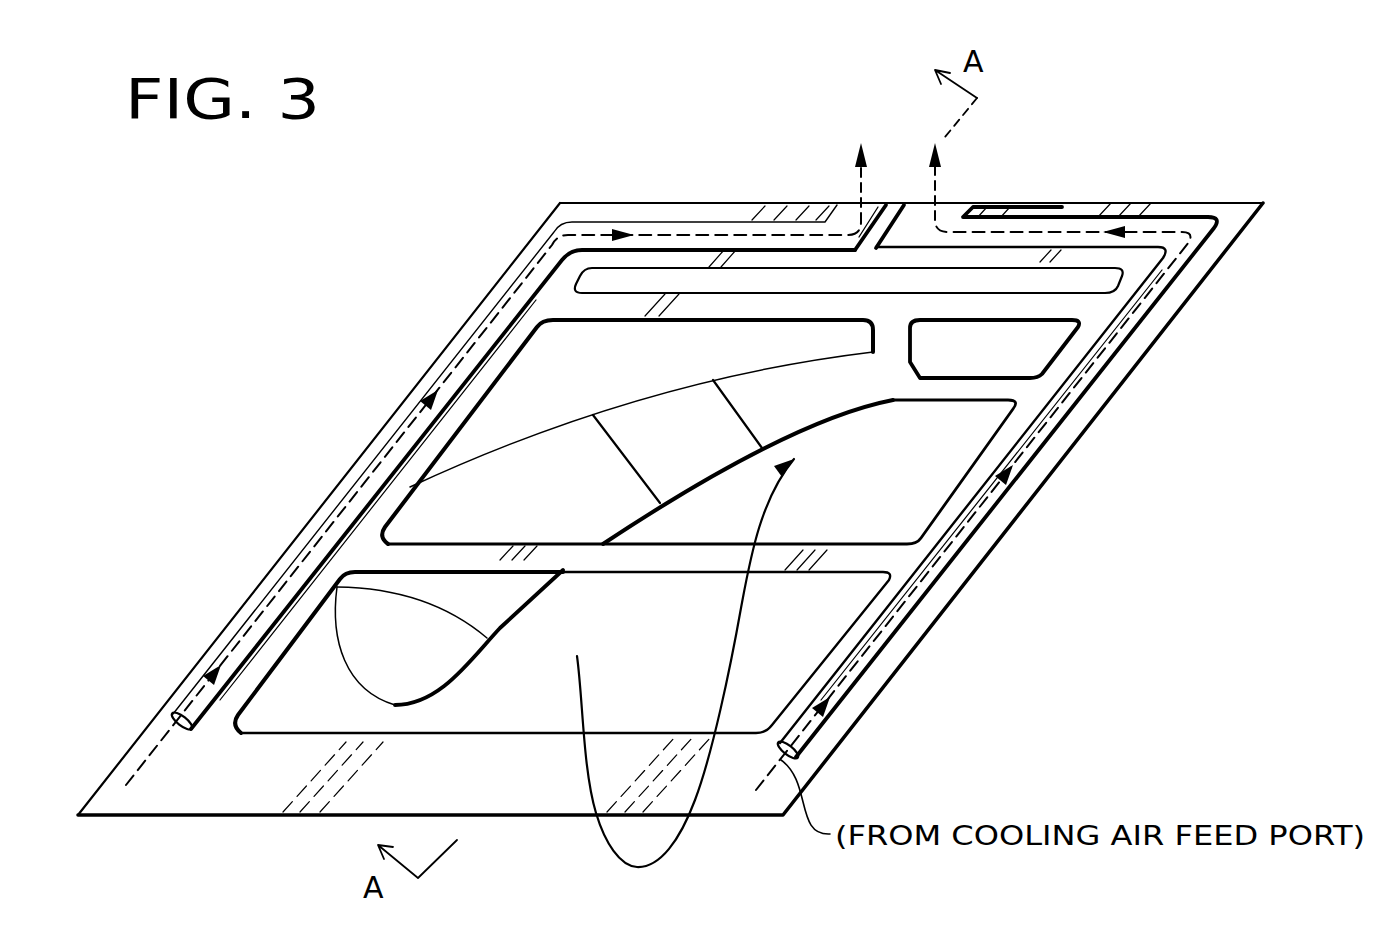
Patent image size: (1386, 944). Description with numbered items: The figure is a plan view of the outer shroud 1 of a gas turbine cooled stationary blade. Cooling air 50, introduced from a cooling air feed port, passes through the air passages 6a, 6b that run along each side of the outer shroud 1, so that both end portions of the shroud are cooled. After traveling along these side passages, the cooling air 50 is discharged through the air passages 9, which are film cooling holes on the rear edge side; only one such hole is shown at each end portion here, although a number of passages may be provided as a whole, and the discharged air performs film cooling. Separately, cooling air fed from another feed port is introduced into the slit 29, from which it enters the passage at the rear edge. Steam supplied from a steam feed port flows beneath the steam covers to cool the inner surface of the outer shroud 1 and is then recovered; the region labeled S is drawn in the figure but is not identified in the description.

The outer shroud 1 is at (638, 203).
The slit 29 is at (727, 278).
The air passage 9 is at (943, 204).
The cooling air 50 is at (397, 442).
The air passage 6a is at (907, 600).
The air passage 6b is at (233, 640).
The space S is at (685, 684).